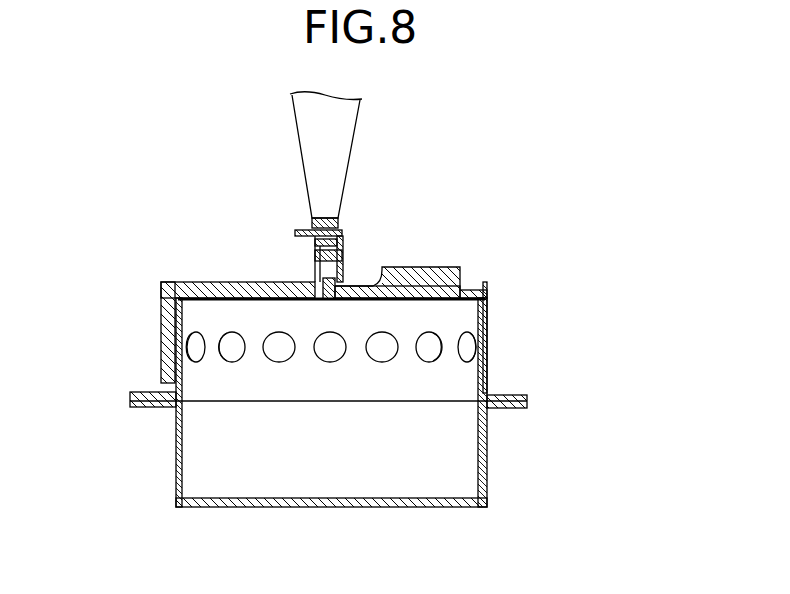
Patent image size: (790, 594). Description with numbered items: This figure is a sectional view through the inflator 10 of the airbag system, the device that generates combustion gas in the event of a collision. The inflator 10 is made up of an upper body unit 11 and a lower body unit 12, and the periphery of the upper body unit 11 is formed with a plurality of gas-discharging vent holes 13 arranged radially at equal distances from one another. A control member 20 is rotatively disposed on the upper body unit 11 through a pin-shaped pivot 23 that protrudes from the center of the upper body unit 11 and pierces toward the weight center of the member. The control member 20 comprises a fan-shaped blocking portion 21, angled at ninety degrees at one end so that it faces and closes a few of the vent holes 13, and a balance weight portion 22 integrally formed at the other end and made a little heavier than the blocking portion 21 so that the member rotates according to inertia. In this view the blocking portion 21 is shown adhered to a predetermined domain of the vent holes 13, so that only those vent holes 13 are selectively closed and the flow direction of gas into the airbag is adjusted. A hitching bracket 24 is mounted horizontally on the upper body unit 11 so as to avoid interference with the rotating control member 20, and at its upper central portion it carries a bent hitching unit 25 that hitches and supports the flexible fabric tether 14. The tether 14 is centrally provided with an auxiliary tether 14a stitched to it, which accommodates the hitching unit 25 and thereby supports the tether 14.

The inflator 10 is at (388, 394).
The upper body unit 11 is at (483, 325).
The lower body unit 12 is at (485, 433).
The vent holes 13 is at (427, 357).
The tether 14 is at (332, 152).
The auxiliary tether 14a is at (320, 218).
The control member 20 is at (409, 217).
The blocking portion 21 is at (326, 278).
The balance weight portion 22 is at (373, 192).
The pivot 23 is at (378, 272).
The hitching bracket 24 is at (324, 272).
The hitching unit 25 is at (300, 227).